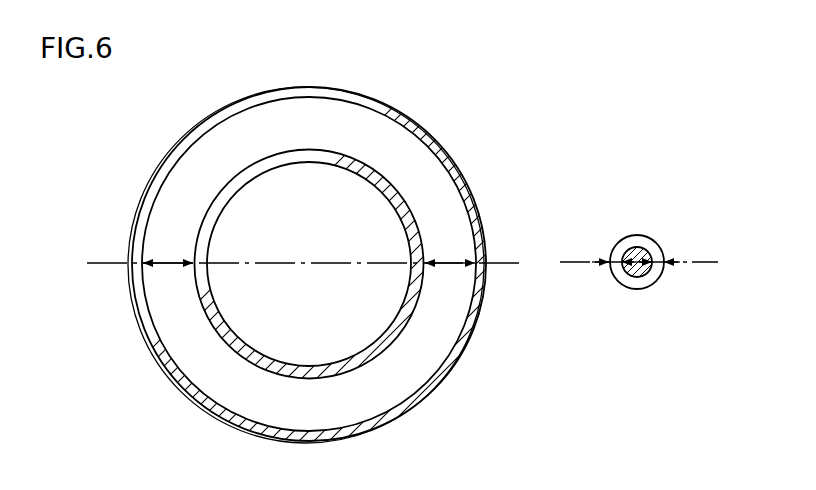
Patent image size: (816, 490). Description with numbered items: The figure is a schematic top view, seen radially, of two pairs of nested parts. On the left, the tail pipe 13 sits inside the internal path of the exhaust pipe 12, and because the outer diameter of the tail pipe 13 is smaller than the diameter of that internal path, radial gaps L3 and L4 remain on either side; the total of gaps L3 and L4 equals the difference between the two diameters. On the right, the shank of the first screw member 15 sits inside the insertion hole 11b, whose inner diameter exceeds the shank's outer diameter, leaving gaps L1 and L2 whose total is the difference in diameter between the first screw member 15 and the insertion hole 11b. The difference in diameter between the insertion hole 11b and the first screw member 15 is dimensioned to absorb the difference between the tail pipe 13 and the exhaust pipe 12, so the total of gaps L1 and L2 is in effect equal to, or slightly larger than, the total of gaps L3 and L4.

The exhaust pipe 12 is at (406, 118).
The tail pipe 13 is at (397, 200).
The gap L3 is at (168, 263).
The gap L4 is at (449, 262).
The insertion hole 11b is at (643, 238).
The first screw member 15 is at (649, 275).
The gap L1 is at (612, 256).
The gap L2 is at (661, 256).